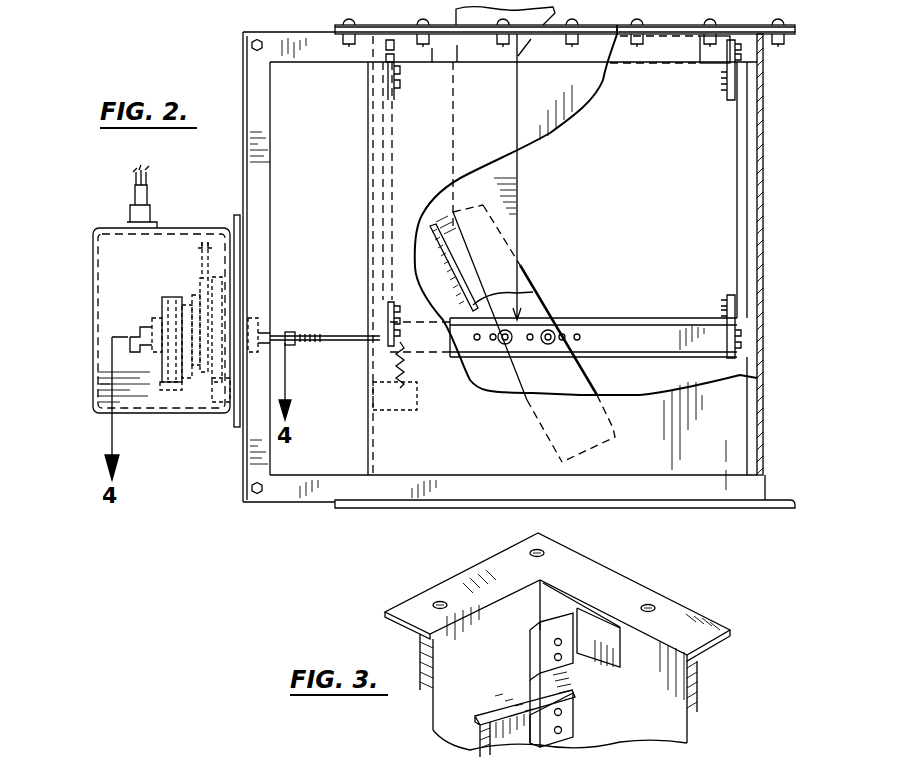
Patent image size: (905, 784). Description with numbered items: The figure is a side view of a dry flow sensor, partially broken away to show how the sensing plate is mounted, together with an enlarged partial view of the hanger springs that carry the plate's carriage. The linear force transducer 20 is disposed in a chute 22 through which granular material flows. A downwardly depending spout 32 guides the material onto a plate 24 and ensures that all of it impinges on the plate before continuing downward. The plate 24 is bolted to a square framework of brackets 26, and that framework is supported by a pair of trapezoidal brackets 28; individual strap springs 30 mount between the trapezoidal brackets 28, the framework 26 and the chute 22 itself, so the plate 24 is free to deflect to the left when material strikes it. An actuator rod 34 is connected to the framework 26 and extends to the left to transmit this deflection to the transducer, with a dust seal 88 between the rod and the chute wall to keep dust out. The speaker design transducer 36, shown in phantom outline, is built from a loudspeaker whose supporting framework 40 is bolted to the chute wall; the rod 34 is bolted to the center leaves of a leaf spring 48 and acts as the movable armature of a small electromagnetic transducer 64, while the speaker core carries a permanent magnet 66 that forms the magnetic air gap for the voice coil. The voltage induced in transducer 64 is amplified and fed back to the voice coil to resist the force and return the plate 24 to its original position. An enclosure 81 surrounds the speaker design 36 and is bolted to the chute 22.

In FIG. 2, the linear force transducer 20 is at (84, 304).
In FIG. 2, the chute 22 is at (763, 112).
In FIG. 3, the chute 22 is at (637, 588).
In FIG. 2, the plate 24 is at (412, 238).
In FIG. 2, the framework of brackets 26 is at (612, 330).
In FIG. 2, the trapezoidal brackets 28 is at (372, 222).
In FIG. 3, the trapezoidal brackets 28 is at (482, 742).
In FIG. 2, the strap springs 30 is at (400, 72).
In FIG. 3, the strap springs 30 is at (565, 685).
In FIG. 2, the spout 32 is at (520, 168).
In FIG. 2, the actuator rod 34 is at (338, 345).
In FIG. 2, the speaker design transducer 36 is at (143, 313).
In FIG. 2, the supporting framework 40 is at (212, 400).
In FIG. 2, the leaf spring 48 is at (212, 246).
In FIG. 2, the electromagnetic transducer 64 is at (147, 360).
In FIG. 2, the permanent magnet 66 is at (174, 384).
In FIG. 2, the enclosure 81 is at (108, 228).
In FIG. 2, the dust seal 88 is at (262, 318).